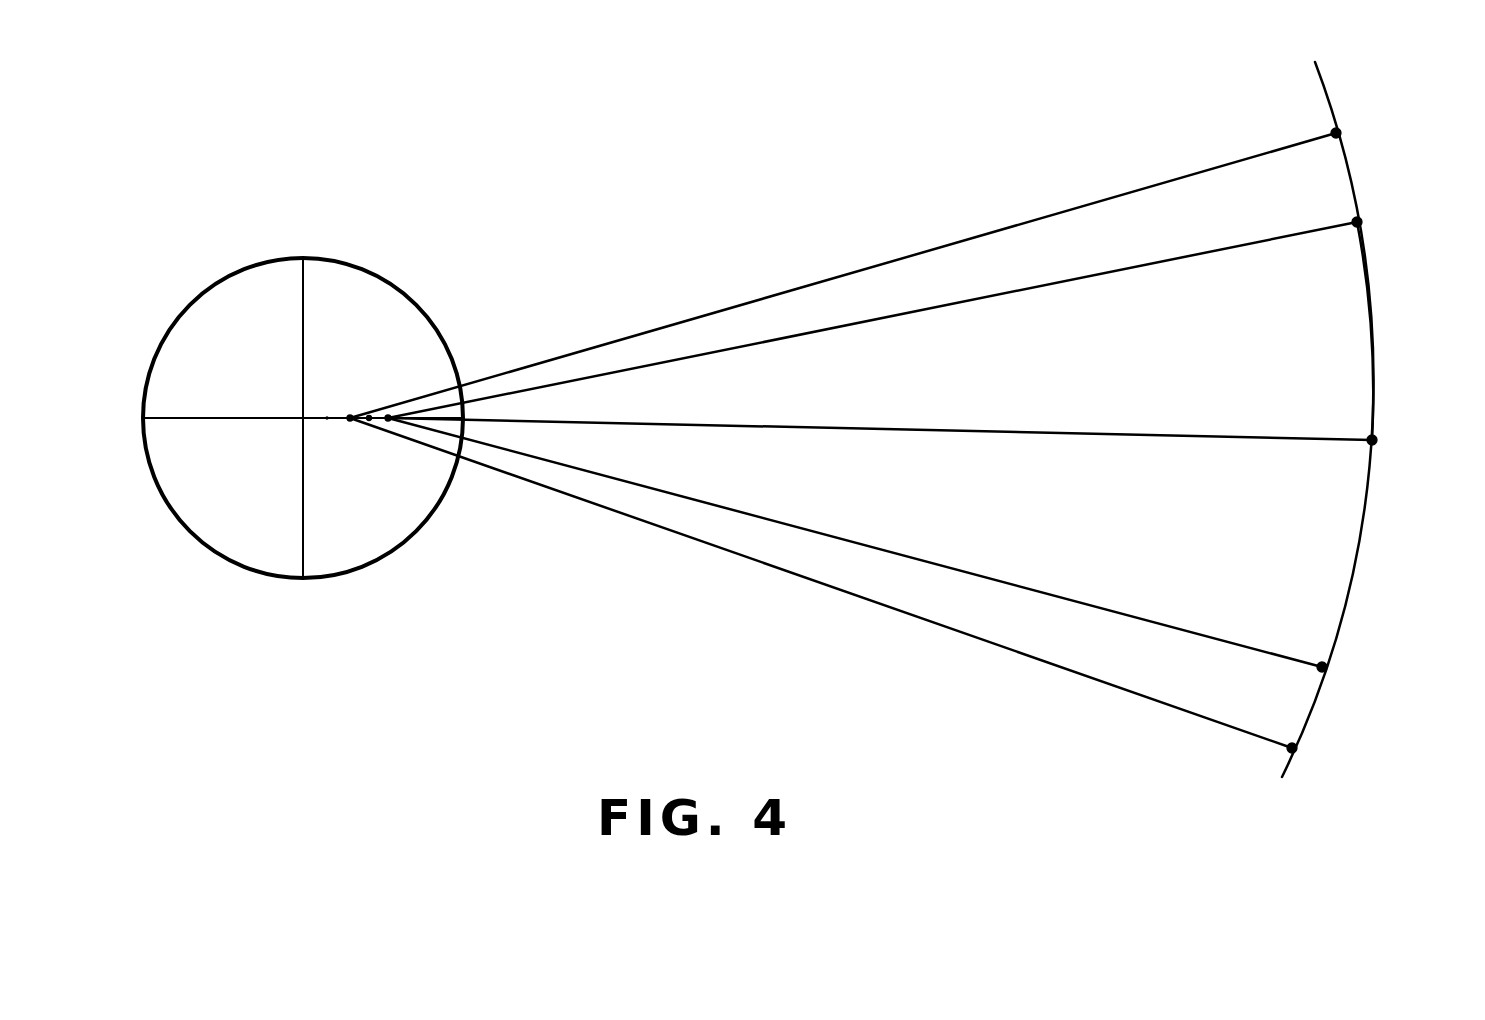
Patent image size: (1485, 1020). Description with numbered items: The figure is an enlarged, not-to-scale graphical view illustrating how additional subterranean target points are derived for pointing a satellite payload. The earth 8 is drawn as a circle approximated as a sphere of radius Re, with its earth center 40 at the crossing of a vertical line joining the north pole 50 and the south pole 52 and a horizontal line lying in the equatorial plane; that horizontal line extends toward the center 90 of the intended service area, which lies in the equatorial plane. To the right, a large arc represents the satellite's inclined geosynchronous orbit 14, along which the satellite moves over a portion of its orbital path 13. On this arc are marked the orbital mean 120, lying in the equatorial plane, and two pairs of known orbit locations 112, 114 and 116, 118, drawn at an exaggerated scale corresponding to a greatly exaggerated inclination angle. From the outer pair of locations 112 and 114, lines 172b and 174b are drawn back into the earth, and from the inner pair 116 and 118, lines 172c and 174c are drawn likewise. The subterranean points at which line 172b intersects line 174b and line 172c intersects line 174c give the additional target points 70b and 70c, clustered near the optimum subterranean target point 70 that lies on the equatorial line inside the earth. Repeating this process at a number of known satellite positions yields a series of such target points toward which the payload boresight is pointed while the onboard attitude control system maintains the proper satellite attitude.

The earth 8 is at (254, 583).
The north pole 50 is at (303, 257).
The south pole 52 is at (332, 531).
The earth center 40 is at (303, 418).
The earth radius Re is at (327, 417).
The center of the intended service area 90 is at (467, 421).
The subterranean target point 70 is at (377, 413).
The target point 70b is at (350, 421).
The target point 70c is at (386, 422).
The line 172b is at (685, 320).
The line 172c is at (947, 307).
The line 174b is at (750, 560).
The line 174c is at (932, 562).
The orbital path 13 is at (1367, 288).
The inclined geosynchronous orbit 14 is at (1370, 332).
The known orbit location 112 is at (1336, 133).
The known orbit location 116 is at (1357, 222).
The orbital mean 120 is at (1372, 440).
The known orbit location 118 is at (1322, 667).
The known orbit location 114 is at (1292, 748).